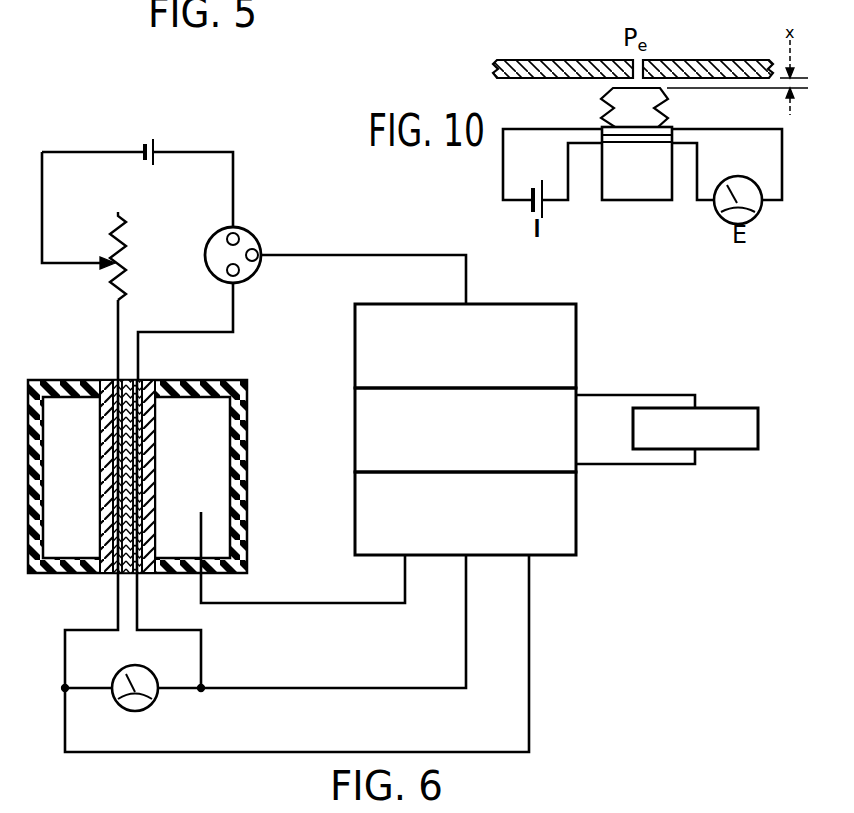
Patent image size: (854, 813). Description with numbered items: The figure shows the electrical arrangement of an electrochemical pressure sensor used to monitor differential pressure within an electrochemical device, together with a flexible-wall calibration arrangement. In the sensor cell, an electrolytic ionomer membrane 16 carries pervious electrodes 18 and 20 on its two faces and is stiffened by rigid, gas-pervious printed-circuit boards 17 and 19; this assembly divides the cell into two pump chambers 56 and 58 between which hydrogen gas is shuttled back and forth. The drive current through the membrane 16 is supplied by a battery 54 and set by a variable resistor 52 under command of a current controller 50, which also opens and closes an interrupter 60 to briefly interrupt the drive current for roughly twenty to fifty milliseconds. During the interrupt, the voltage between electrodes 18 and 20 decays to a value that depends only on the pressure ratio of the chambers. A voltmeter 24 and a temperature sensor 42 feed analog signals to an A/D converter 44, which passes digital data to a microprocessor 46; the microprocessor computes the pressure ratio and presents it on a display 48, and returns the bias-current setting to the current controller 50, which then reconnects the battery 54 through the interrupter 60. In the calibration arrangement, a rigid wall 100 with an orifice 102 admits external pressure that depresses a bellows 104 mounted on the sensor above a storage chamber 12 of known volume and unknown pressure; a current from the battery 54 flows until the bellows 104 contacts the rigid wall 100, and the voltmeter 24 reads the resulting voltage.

In FIG. 6, the voltage source (battery) 54 is at (156, 146).
In FIG. 10, the voltage source (battery) 54 is at (547, 207).
In FIG. 6, the variable resistor 52 is at (126, 238).
In FIG. 6, the interrupter 60 is at (250, 227).
In FIG. 6, the electrolytic membrane 16 is at (127, 380).
In FIG. 6, the pervious conductor (electrode) 18 is at (112, 407).
In FIG. 6, the pervious conductor (electrode) 20 is at (134, 410).
In FIG. 6, the rigid supporting printed-circuit board 17 is at (108, 517).
In FIG. 6, the rigid supporting printed-circuit board 19 is at (148, 525).
In FIG. 6, the pump chamber 56 is at (93, 496).
In FIG. 6, the pump chamber 58 is at (206, 496).
In FIG. 6, the temperature sensor 42 is at (205, 533).
In FIG. 6, the voltmeter (voltage sensor) 24 is at (142, 708).
In FIG. 10, the voltmeter (voltage sensor) 24 is at (718, 202).
In FIG. 6, the current controller 50 is at (577, 350).
In FIG. 6, the microprocessor 46 is at (355, 432).
In FIG. 6, the A/D converter 44 is at (577, 497).
In FIG. 6, the display 48 is at (710, 408).
In FIG. 10, the orifice 102 is at (635, 61).
In FIG. 10, the rigid wall 100 is at (683, 68).
In FIG. 10, the bellows 104 is at (604, 107).
In FIG. 10, the storage chamber (reference chamber) 12 is at (636, 200).